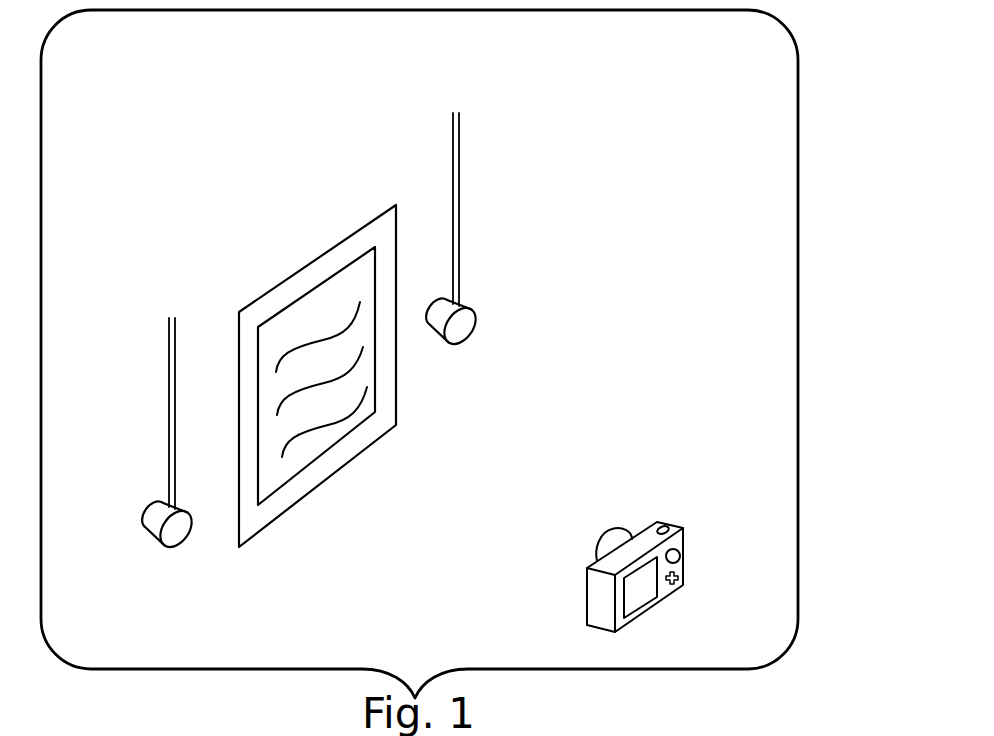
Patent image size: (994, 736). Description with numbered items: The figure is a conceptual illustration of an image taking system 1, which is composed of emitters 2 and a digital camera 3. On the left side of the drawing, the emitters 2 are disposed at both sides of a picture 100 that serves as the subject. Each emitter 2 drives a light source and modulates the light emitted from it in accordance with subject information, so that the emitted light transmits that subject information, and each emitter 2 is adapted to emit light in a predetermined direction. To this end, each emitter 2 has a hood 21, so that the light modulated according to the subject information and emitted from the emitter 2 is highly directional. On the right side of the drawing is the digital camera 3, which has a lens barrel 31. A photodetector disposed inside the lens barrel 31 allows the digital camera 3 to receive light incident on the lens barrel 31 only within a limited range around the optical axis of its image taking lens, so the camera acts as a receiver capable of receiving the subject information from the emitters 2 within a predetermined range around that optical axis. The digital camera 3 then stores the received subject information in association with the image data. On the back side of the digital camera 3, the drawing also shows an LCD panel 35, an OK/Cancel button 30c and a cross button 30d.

The image taking system 1 is at (602, 102).
The picture 100 is at (307, 262).
The emitters 2 is at (475, 312).
The hood 21 is at (445, 322).
The digital camera 3 is at (671, 555).
The lens barrel 31 is at (613, 538).
The OK/Cancel button 30c is at (680, 556).
The cross button 30d is at (685, 568).
The LCD panel 35 is at (638, 595).